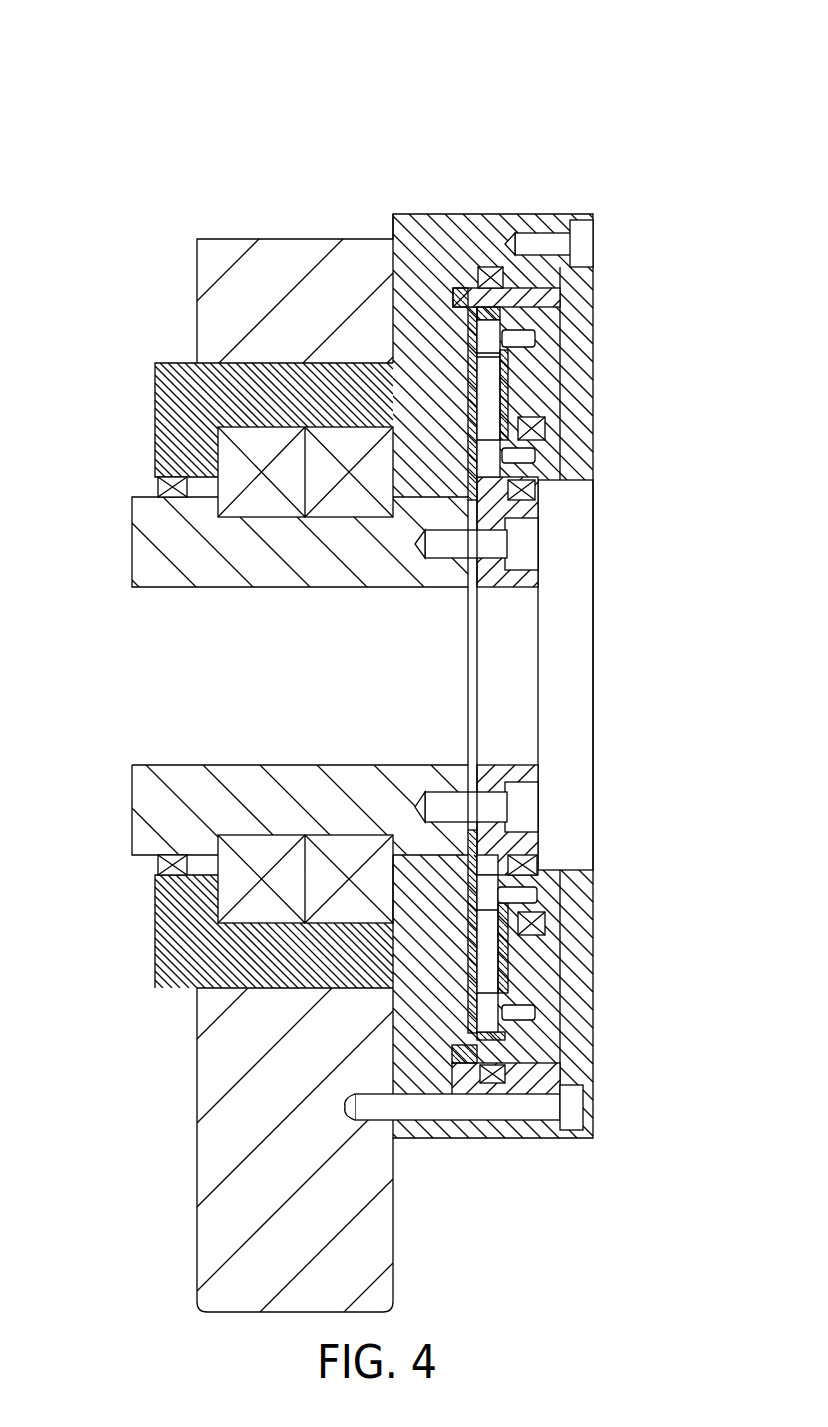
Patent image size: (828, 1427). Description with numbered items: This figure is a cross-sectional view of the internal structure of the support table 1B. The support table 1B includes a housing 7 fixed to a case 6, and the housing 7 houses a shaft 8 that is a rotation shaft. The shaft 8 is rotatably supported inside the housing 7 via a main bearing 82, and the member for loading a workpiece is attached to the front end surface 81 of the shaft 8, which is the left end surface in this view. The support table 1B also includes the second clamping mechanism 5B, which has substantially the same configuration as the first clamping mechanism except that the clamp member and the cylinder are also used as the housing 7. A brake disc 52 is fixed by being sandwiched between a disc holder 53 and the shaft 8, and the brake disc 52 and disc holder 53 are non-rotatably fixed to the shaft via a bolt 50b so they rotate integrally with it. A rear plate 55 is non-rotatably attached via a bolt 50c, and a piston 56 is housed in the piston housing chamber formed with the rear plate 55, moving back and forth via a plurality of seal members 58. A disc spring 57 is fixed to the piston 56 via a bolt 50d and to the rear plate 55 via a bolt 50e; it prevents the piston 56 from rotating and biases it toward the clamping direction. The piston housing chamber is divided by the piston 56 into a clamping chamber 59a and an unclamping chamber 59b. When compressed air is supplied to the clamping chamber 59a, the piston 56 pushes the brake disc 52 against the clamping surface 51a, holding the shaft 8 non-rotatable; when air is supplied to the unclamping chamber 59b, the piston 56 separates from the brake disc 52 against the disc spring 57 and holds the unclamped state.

The support table 1B is at (376, 659).
The second clamping mechanism 5B is at (522, 662).
The case 6 is at (288, 240).
The housing 7 is at (155, 378).
The shaft 8 is at (132, 545).
The front end surface 81 is at (132, 800).
The main bearing 82 is at (228, 462).
The bolt 50b is at (527, 805).
The bolt 50c is at (593, 1110).
The bolt 50d is at (522, 1010).
The bolt 50e is at (528, 895).
The clamping surface 51a is at (462, 1063).
The brake disc 52 is at (478, 975).
The disc holder 53 is at (545, 838).
The rear plate 55 is at (593, 438).
The piston 56 is at (555, 1048).
The disc spring 57 is at (505, 950).
The seal member 58 is at (500, 270).
The clamping chamber 59a is at (530, 300).
The unclamping chamber 59b is at (453, 292).